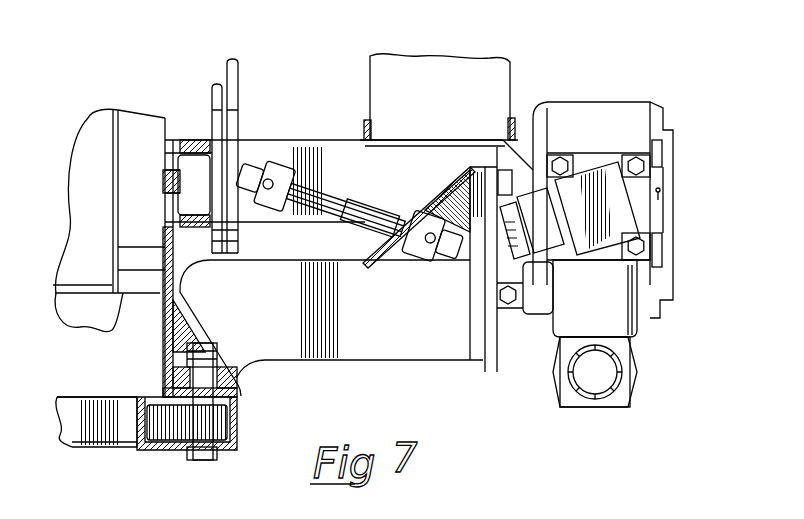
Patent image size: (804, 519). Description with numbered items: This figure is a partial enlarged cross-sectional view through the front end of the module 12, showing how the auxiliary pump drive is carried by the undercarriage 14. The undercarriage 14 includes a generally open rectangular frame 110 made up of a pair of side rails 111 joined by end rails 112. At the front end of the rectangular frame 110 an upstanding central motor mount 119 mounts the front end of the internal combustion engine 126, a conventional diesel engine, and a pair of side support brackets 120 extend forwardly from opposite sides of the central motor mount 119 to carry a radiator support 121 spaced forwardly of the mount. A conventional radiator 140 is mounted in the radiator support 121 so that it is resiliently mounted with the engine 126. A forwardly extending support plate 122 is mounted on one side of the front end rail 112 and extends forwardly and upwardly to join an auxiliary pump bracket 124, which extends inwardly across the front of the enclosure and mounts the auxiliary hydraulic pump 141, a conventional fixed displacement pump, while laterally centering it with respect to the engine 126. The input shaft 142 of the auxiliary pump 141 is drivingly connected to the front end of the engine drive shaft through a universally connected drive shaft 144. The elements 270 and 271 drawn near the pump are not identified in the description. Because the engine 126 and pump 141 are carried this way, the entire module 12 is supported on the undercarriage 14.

The module 12 is at (344, 56).
The undercarriage 14 is at (74, 455).
The open rectangular frame 110 is at (127, 458).
The side rails 111 is at (97, 396).
The end rails 112 is at (180, 450).
The central motor mount 119 is at (167, 345).
The side support brackets 120 is at (441, 183).
The radiator support 121 is at (365, 133).
The support plate 122 is at (356, 327).
The auxiliary pump bracket 124 is at (483, 362).
The internal combustion engine 126 is at (129, 104).
The radiator 140 is at (501, 81).
The auxiliary hydraulic pump 141 is at (629, 100).
The input shaft 142 is at (467, 263).
The universally connected drive shaft 144 is at (378, 214).
The valve body 270 is at (626, 290).
The nut 271 is at (520, 296).